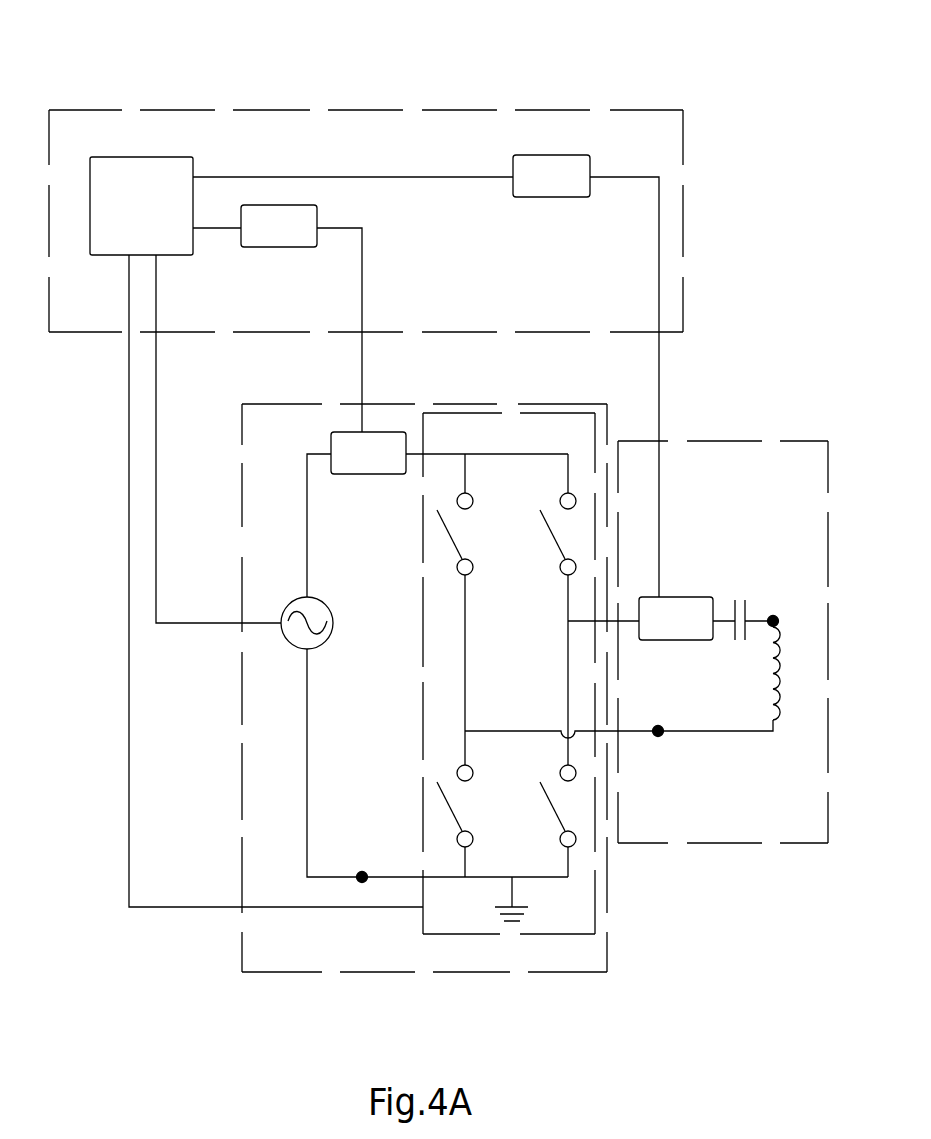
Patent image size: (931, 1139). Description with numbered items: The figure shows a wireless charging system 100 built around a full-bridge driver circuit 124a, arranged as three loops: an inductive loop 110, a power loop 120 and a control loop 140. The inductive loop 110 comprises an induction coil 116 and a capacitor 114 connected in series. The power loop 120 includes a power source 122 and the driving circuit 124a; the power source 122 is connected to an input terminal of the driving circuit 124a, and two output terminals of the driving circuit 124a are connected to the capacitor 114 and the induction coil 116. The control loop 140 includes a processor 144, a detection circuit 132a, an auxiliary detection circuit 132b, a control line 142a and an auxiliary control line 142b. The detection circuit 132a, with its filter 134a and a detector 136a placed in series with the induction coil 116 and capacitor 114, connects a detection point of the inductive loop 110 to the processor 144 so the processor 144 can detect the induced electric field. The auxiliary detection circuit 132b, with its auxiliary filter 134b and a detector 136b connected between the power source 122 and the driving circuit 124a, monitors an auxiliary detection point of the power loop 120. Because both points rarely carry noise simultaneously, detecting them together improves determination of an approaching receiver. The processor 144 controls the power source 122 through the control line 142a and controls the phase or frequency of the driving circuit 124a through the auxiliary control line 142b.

The wireless power transfer system 100 is at (183, 25).
The inductive loop 110 is at (750, 443).
The capacitor 114 is at (747, 612).
The induction coil 116 is at (780, 702).
The power loop 120 is at (429, 402).
The power source 122 is at (285, 607).
The full-bridge driver circuit 124a is at (513, 415).
The detection circuit 132a is at (658, 292).
The auxiliary detection circuit 132b is at (362, 283).
The filter 134a is at (551, 176).
The auxiliary filter 134b is at (279, 226).
The detector 136a is at (676, 618).
The detector 136b is at (368, 453).
The control loop 140 is at (112, 108).
The control line 142a is at (157, 320).
The auxiliary control line 142b is at (128, 328).
The processor 144 is at (141, 206).